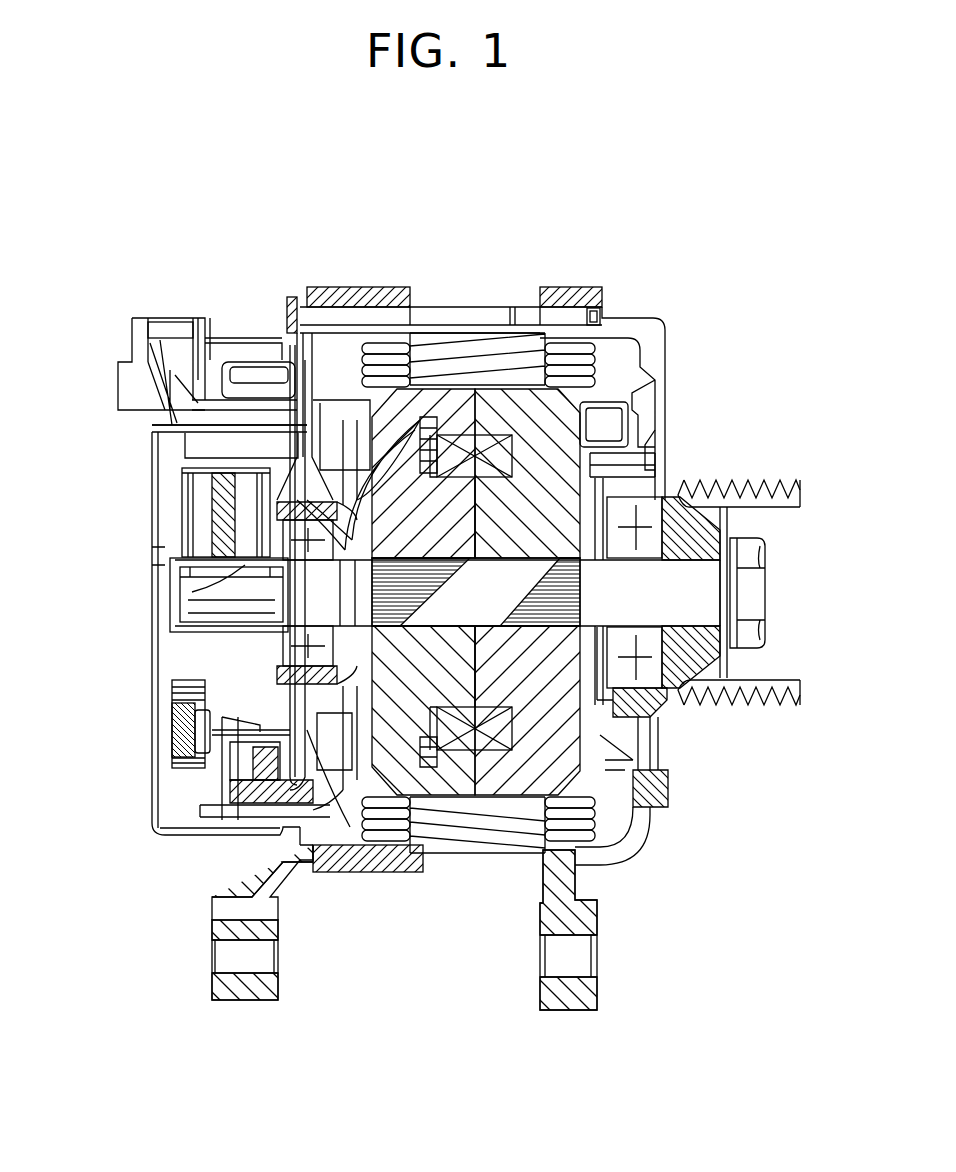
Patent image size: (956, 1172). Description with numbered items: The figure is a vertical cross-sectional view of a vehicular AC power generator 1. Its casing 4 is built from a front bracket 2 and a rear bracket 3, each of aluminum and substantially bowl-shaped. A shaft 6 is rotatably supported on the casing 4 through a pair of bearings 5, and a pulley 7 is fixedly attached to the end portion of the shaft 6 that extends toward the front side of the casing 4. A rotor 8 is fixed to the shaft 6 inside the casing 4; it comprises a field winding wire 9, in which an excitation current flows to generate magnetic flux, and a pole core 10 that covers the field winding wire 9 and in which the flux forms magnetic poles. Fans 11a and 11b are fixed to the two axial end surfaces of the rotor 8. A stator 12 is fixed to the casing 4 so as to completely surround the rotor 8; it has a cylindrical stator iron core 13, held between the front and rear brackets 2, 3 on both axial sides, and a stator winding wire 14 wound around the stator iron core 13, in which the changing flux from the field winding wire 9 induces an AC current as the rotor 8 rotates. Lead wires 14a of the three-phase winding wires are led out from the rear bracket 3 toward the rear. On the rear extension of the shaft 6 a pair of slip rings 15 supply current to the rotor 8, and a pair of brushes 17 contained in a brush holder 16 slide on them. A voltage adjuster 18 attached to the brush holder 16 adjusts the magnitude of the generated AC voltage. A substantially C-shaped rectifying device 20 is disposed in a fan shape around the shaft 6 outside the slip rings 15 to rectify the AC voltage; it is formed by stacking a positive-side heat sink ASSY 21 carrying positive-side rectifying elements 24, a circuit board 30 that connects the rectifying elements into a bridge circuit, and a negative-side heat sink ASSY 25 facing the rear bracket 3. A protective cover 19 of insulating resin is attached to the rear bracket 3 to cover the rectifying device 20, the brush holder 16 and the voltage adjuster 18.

The vehicular AC power generator 1 is at (184, 212).
The front bracket 2 is at (666, 340).
The rear bracket 3 is at (331, 293).
The casing 4 is at (668, 314).
The bearings 5 is at (655, 502).
The shaft 6 is at (710, 600).
The pulley 7 is at (741, 481).
The rotor 8 is at (500, 247).
The field winding wire 9 is at (462, 452).
The pole core 10 is at (492, 405).
The fan 11a is at (611, 772).
The fan 11b is at (360, 763).
The stator 12 is at (527, 895).
The stator iron core 13 is at (478, 843).
The stator winding wire 14 is at (537, 846).
The lead wires 14a is at (335, 848).
The slip rings 15 is at (230, 586).
The brush holder 16 is at (172, 476).
The brushes 17 is at (203, 517).
The voltage adjuster 18 is at (157, 430).
The protective cover 19 is at (160, 551).
The rectifying device 20 is at (217, 788).
The positive-side heat sink ASSY 21 is at (177, 688).
The positive-side rectifying elements 24 is at (172, 728).
The negative-side heat sink ASSY 25 is at (224, 768).
The circuit board 30 is at (224, 821).